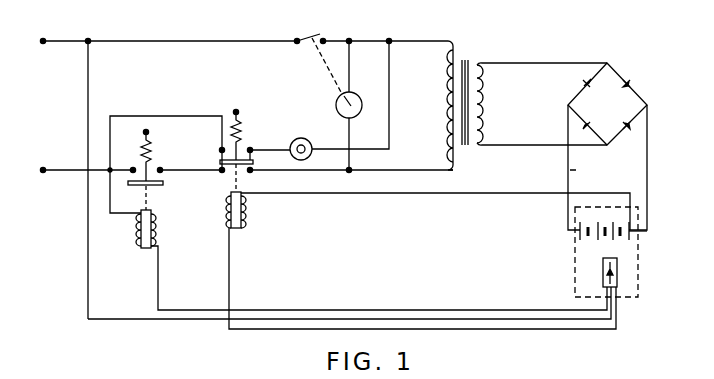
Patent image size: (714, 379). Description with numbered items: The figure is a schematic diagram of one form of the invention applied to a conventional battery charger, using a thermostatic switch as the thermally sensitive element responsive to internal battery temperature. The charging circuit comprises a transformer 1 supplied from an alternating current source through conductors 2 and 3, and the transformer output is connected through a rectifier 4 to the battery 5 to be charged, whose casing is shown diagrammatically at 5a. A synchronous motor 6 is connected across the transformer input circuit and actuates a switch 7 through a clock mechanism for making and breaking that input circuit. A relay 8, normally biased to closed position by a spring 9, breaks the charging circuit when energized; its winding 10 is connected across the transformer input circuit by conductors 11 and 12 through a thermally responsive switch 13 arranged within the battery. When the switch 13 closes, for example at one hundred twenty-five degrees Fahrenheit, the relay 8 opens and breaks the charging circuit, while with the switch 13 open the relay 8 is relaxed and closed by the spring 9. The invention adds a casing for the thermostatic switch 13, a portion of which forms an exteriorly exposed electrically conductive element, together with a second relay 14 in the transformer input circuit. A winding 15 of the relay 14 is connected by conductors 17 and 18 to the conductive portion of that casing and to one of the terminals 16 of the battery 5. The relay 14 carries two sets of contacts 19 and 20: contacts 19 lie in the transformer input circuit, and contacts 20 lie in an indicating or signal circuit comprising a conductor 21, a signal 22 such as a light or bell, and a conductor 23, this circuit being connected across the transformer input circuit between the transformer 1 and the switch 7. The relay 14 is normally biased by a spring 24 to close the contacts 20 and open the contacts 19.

The transformer 1 is at (466, 58).
The conductor 2 is at (58, 41).
The conductor 3 is at (58, 170).
The rectifier 4 is at (607, 146).
The battery 5 is at (626, 241).
The battery casing 5a is at (640, 277).
The synchronous motor 6 is at (336, 106).
The switch 7 is at (309, 39).
The relay 8 is at (153, 200).
The spring 9 is at (149, 150).
The relay winding 10 is at (156, 236).
The conductor 11 is at (183, 310).
The conductor 12 is at (168, 320).
The thermally responsive switch 13 is at (620, 277).
The second relay 14 is at (231, 181).
The relay winding 15 is at (230, 208).
The battery terminal 16 is at (630, 222).
The conductor 17 is at (231, 294).
The conductor 18 is at (350, 196).
The contacts 19 is at (253, 167).
The contacts 20 is at (252, 152).
The conductor 21 is at (391, 113).
The signal 22 is at (309, 141).
The conductor 23 is at (172, 116).
The spring 24 is at (241, 129).